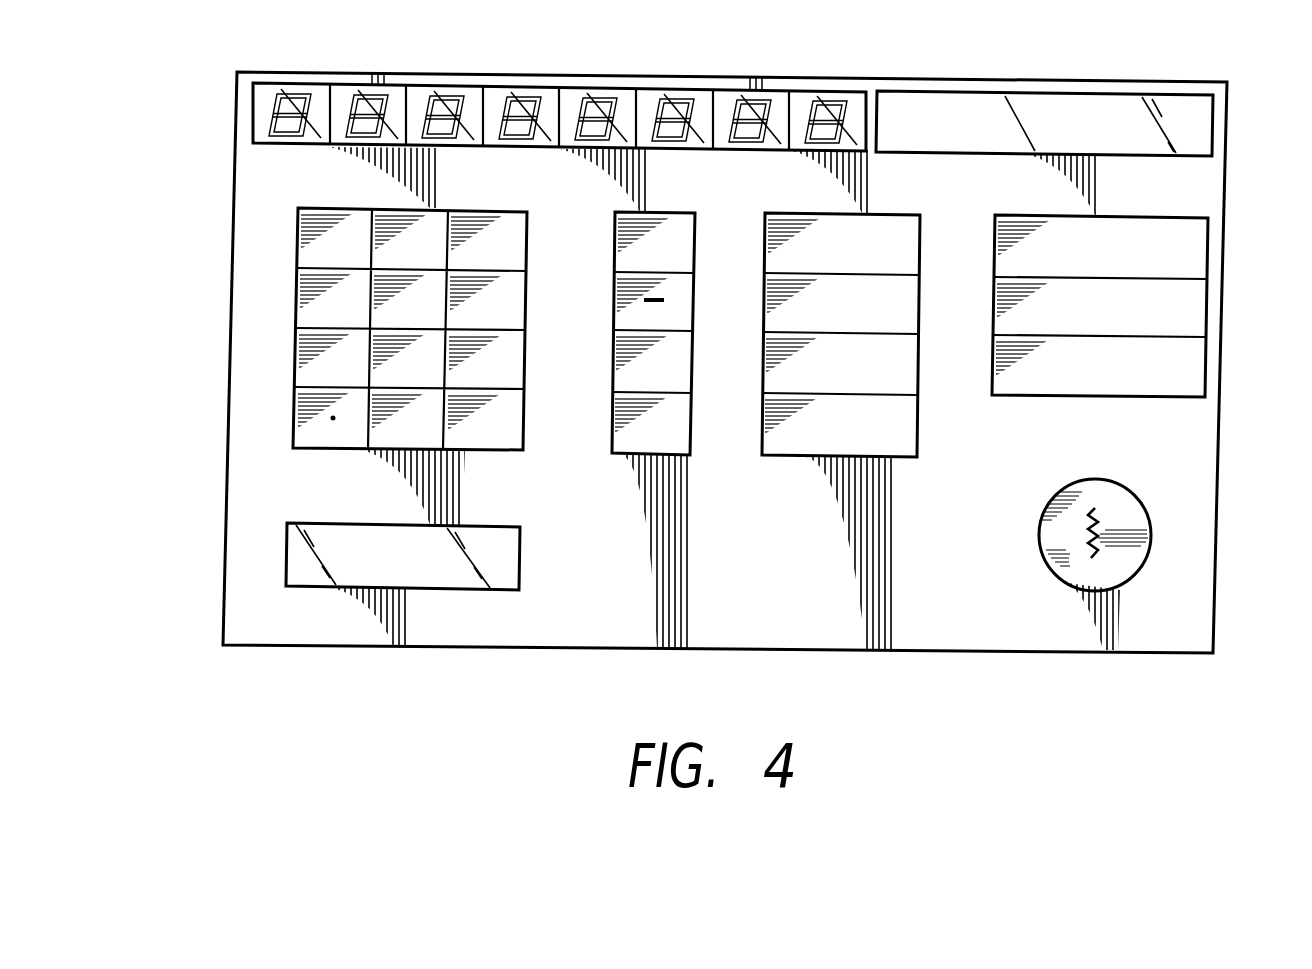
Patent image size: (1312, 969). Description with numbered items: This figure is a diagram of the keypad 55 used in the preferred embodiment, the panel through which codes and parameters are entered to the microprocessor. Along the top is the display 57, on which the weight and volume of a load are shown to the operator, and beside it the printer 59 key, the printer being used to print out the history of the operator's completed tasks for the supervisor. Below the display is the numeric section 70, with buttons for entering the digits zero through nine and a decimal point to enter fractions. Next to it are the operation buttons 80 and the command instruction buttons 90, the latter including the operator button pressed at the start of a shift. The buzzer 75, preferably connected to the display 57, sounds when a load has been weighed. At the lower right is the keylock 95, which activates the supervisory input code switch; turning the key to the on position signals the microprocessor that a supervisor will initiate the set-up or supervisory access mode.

The keypad 55 is at (233, 235).
The display 57 is at (273, 103).
The printer 59 is at (1193, 138).
The numeric section 70 is at (291, 402).
The buzzer 75 is at (505, 566).
The operation buttons 80 is at (643, 460).
The command instruction buttons 90 is at (1028, 397).
The keylock 95 is at (1045, 537).